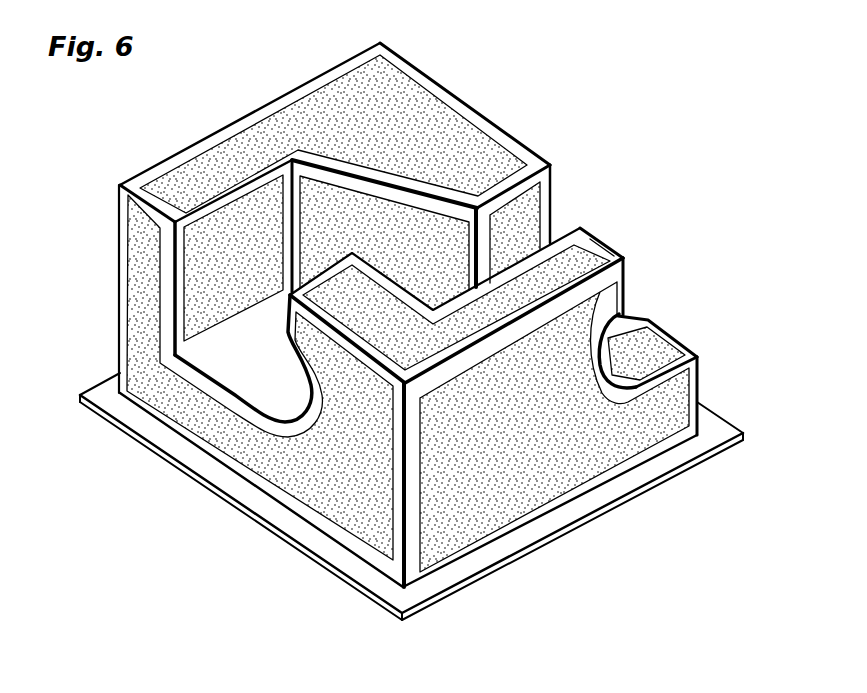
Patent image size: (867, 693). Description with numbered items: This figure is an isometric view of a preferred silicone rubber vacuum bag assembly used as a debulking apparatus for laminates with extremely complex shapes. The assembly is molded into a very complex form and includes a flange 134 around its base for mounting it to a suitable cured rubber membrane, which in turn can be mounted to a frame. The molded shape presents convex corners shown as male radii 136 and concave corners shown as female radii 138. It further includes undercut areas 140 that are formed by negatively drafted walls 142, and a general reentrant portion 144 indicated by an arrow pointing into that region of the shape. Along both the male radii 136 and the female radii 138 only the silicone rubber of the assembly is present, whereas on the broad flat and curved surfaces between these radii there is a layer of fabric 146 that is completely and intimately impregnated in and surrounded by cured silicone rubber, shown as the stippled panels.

The flange 134 is at (722, 424).
The male radii 136 is at (241, 120).
The female radii 138 is at (291, 236).
The undercut areas 140 is at (646, 349).
The negatively drafted walls 142 is at (605, 337).
The reentrant portion 144 is at (247, 369).
The layer of fabric 146 is at (334, 92).